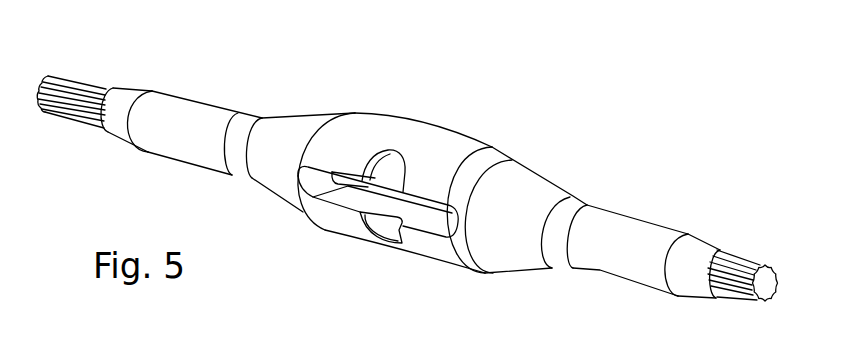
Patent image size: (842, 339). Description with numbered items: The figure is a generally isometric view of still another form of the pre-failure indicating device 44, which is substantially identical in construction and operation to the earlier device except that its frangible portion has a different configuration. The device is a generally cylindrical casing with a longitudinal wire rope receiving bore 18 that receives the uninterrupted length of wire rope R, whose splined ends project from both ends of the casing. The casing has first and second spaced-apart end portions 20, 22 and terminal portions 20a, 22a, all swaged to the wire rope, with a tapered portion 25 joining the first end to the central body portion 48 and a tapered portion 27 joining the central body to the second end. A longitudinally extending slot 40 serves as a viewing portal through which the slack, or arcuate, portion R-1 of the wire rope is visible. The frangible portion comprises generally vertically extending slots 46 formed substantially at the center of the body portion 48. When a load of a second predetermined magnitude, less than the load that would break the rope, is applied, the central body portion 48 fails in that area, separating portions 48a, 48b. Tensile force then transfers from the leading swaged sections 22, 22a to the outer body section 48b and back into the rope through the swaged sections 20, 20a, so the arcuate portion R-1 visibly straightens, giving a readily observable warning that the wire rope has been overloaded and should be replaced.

The longitudinal wire rope receiving bore 18 is at (110, 88).
The wire rope R is at (65, 107).
The terminal portion 20a is at (123, 90).
The first end portion 20 is at (205, 108).
The tapered portion 25 is at (285, 122).
The central body portion 48 is at (406, 192).
The body portion 48a is at (343, 153).
The outer body section 48b is at (423, 247).
The pre-failure indicating device 44 is at (412, 257).
The vertically extending slots 46 is at (390, 158).
The longitudinally extending slot 40 is at (355, 208).
The slack portion R-1 is at (370, 183).
The tapered portion 27 is at (535, 182).
The second end portion 22 is at (642, 227).
The terminal portion 22a is at (698, 243).